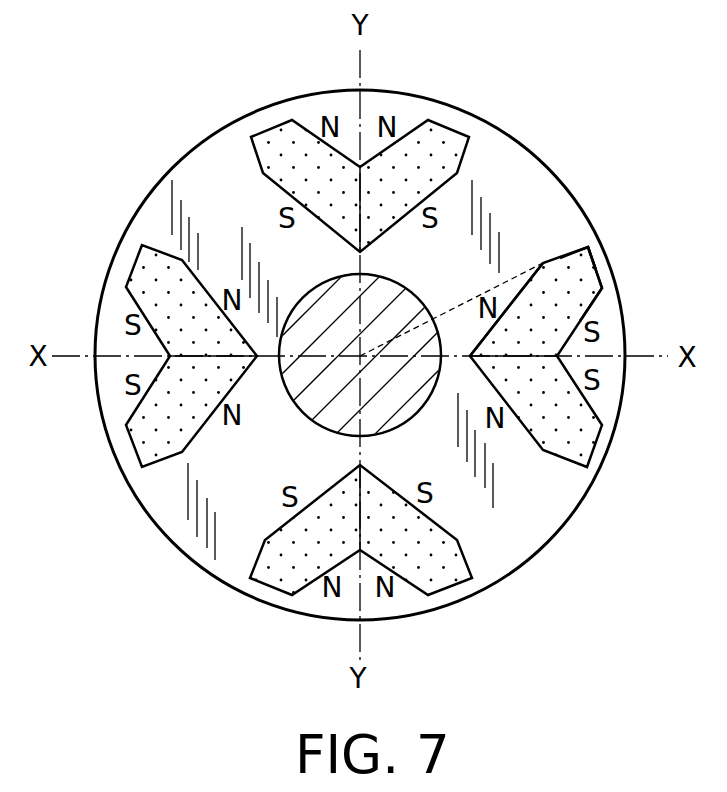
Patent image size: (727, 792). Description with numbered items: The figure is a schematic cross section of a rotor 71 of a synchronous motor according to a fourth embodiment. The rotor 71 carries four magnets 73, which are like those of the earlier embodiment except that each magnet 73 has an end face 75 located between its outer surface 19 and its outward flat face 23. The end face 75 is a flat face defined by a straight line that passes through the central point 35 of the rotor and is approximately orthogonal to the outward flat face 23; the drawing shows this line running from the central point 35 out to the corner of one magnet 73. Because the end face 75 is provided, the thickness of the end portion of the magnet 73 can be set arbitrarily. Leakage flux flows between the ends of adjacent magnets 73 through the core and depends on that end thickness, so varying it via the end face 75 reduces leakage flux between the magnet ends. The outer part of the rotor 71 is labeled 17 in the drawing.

The rotor 71 is at (601, 165).
The rotor yoke 17 is at (530, 527).
The central point 35 is at (362, 357).
The magnet 73 is at (583, 442).
The end face 75 is at (582, 242).
The outward flat face 23 is at (600, 272).
The outer surface 19 is at (514, 305).